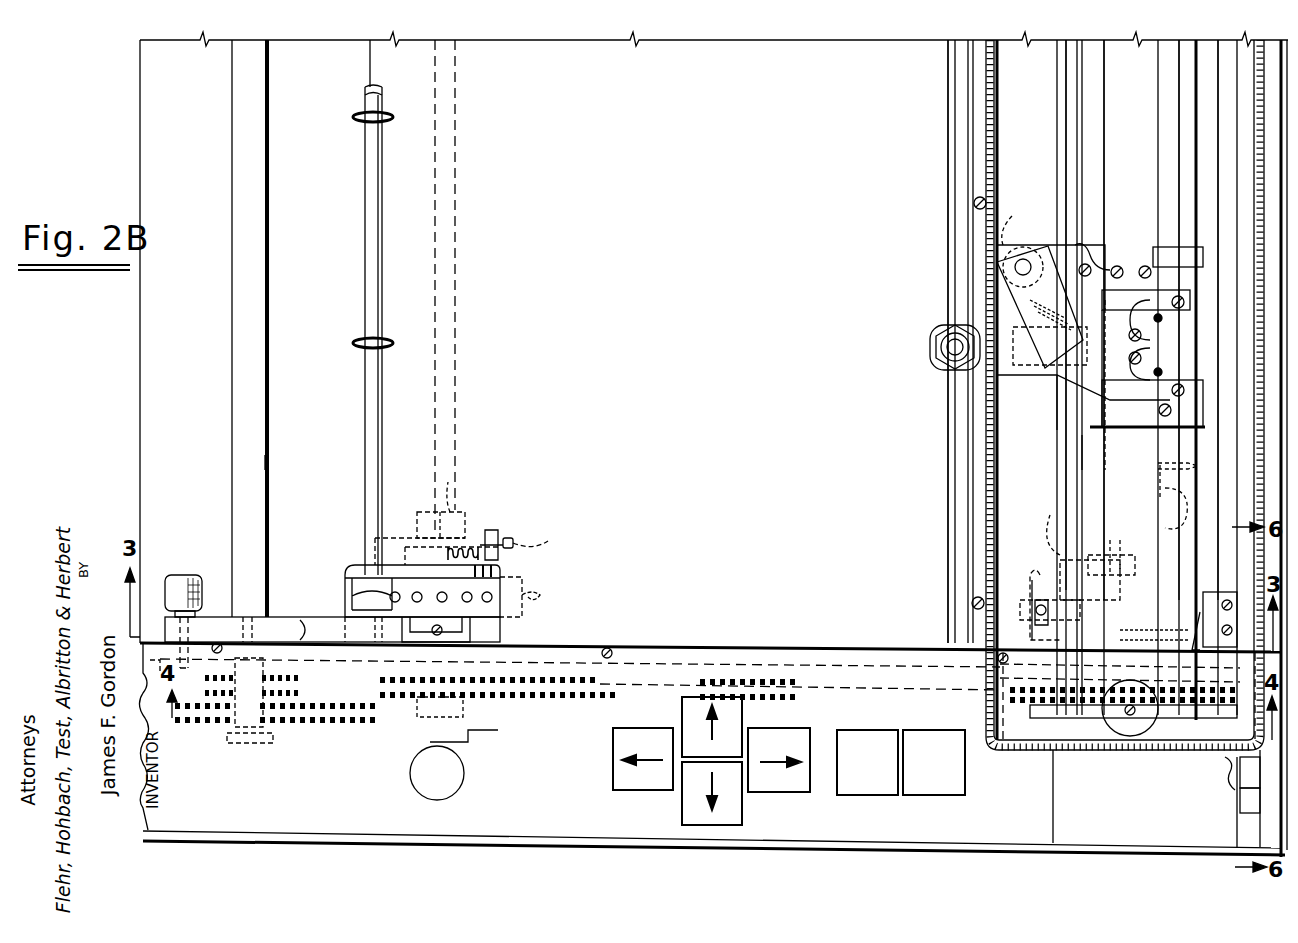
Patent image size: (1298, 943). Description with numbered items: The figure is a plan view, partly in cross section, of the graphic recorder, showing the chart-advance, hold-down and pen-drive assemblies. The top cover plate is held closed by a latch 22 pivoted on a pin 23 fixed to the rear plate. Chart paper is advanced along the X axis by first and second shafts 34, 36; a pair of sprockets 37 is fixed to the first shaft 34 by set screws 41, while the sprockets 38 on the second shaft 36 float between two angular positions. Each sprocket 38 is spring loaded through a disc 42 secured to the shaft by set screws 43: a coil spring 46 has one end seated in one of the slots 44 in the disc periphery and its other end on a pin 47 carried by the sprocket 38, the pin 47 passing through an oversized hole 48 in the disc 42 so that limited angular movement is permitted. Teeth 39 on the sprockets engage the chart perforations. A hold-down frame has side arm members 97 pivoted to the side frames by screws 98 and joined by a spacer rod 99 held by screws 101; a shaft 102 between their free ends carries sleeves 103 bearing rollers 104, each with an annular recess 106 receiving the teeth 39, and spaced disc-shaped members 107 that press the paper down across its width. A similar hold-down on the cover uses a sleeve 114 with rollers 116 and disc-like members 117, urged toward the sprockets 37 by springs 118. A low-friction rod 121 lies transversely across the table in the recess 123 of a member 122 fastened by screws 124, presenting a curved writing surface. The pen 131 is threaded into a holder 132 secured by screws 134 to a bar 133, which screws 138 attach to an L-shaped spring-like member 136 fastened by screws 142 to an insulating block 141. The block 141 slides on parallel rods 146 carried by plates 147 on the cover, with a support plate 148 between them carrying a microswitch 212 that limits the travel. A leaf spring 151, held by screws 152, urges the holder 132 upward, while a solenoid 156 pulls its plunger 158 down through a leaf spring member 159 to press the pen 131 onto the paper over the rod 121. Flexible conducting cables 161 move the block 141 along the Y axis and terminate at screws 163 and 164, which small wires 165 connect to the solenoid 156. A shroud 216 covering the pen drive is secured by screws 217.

The latch 22 is at (1240, 802).
The pin 23 is at (1232, 793).
The first shaft 34 is at (1106, 550).
The second shaft 36 is at (455, 295).
The sprockets 37 is at (1058, 534).
The sprockets 38 is at (522, 580).
The teeth 39 is at (470, 594).
The set screws 41 is at (1118, 561).
The discs 42 is at (548, 541).
The set screws 43 is at (455, 490).
The slots 44 is at (1208, 435).
The coil spring 46 is at (470, 543).
The pin 47 is at (494, 530).
The hole 48 is at (512, 538).
The side arm members 97 is at (295, 618).
The screws 98 is at (195, 610).
The spacer rod 99 is at (270, 463).
The screws 101 is at (270, 626).
The shaft 102 is at (372, 630).
The sleeves 103 is at (365, 222).
The rollers 104 is at (348, 573).
The annular recess 106 is at (352, 599).
The disc-shaped members 107 is at (352, 116).
The sleeve 114 is at (1165, 492).
The rollers 116 is at (1160, 610).
The disc-like members 117 is at (1158, 468).
The springs 118 is at (1150, 630).
The rod 121 is at (955, 511).
The member 122 is at (1000, 428).
The recess 123 is at (960, 438).
The screws 124 is at (1000, 193).
The pen 131 is at (945, 355).
The holder 132 is at (1010, 380).
The bar 133 is at (1173, 390).
The screws 134 is at (1175, 296).
The L-shaped spring-like member 136 is at (1195, 429).
The screws 138 is at (1218, 253).
The block 141 is at (1083, 437).
The screws 142 is at (1145, 465).
The rods 146 is at (1075, 128).
The plates 147 is at (1045, 722).
The support plate 148 is at (1225, 156).
The leaf spring 151 is at (1087, 253).
The screws 152 is at (1085, 247).
The solenoid 156 is at (1010, 240).
The plunger 158 is at (1015, 267).
The leaf spring member 159 is at (1010, 292).
The flexible elongate cables 161 is at (1106, 158).
The screw 163 is at (1150, 320).
The screw 164 is at (1150, 360).
The small wires 165 is at (1160, 318).
The microswitch 212 is at (1212, 592).
The shroud 216 is at (988, 110).
The screws 217 is at (1130, 736).